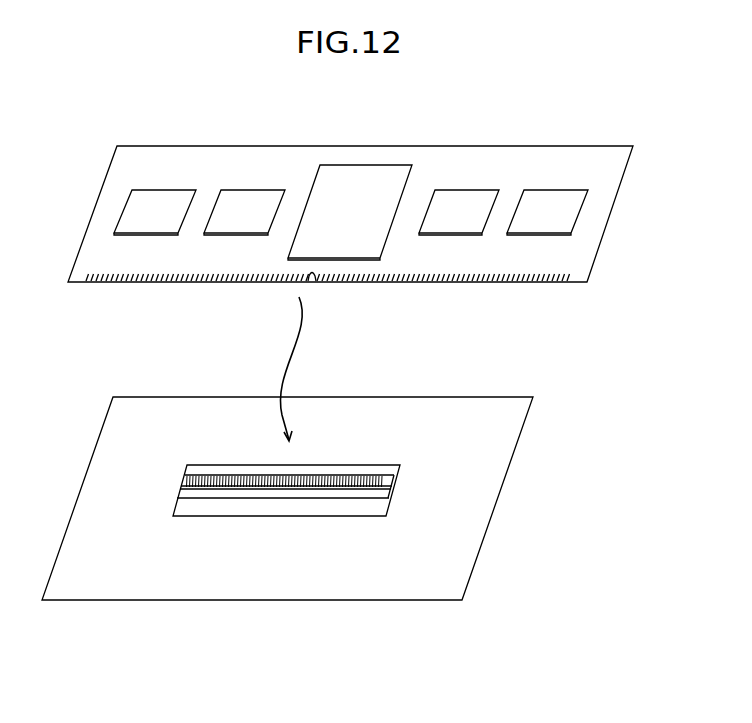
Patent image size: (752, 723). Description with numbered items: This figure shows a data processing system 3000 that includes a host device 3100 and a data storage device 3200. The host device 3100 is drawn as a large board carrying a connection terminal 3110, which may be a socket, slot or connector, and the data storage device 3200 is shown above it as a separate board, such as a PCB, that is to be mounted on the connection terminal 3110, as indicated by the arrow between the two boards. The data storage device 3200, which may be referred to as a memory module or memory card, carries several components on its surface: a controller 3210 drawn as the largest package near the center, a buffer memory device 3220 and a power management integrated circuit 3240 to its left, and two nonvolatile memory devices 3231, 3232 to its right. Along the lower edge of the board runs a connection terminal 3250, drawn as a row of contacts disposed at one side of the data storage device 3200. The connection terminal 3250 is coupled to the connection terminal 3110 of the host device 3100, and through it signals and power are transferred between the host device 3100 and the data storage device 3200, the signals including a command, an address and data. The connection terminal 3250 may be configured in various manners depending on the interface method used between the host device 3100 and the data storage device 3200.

The data processing system 3000 is at (210, 114).
The data storage device 3200 is at (350, 214).
The power management integrated circuit 3240 is at (155, 212).
The buffer memory device 3220 is at (244, 212).
The controller 3210 is at (350, 212).
The nonvolatile memory device 3231 is at (459, 212).
The nonvolatile memory device 3232 is at (547, 212).
The connection terminal 3250 is at (97, 283).
The connection terminal 3110 is at (418, 459).
The host device 3100 is at (287, 498).